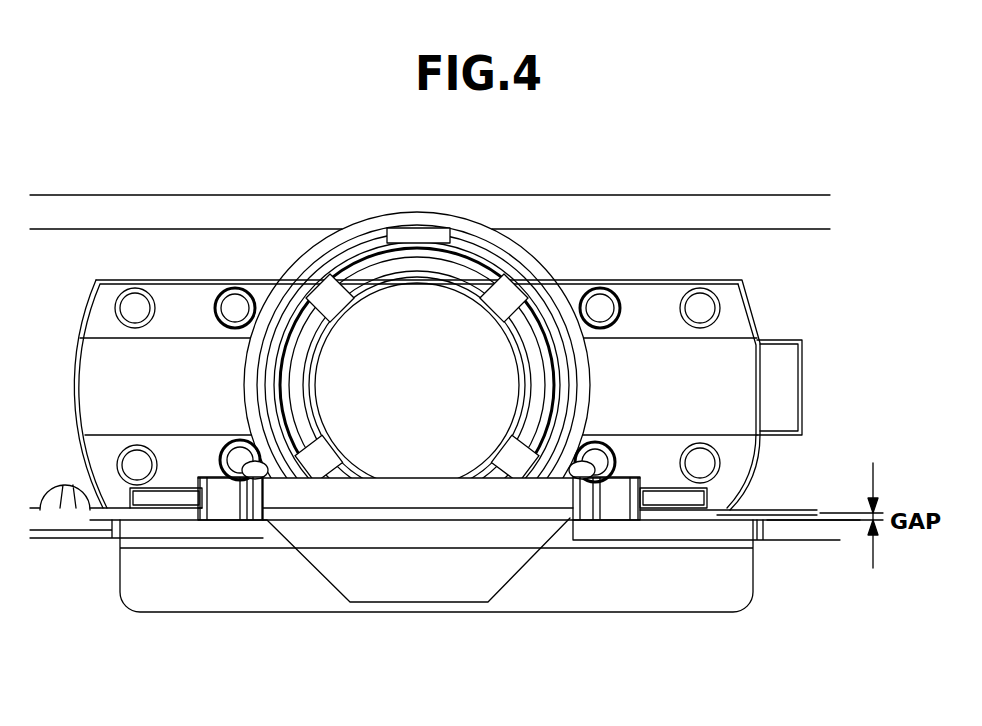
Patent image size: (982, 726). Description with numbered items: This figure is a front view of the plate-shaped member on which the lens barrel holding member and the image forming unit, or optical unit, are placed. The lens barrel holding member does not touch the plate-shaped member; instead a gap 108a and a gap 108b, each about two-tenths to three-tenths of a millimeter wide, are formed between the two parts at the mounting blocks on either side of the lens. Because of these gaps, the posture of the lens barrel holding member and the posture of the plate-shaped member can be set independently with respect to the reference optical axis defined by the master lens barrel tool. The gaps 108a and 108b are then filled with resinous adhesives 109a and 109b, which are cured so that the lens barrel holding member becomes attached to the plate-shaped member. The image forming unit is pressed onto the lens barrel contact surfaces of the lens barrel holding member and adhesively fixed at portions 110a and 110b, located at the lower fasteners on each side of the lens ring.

The adhesively fixed portion 110a is at (223, 457).
The adhesively fixed portion 110b is at (612, 455).
The gap 108a is at (230, 520).
The resinous adhesive 109a is at (219, 581).
The gap 108b is at (605, 520).
The resinous adhesive 109b is at (650, 589).